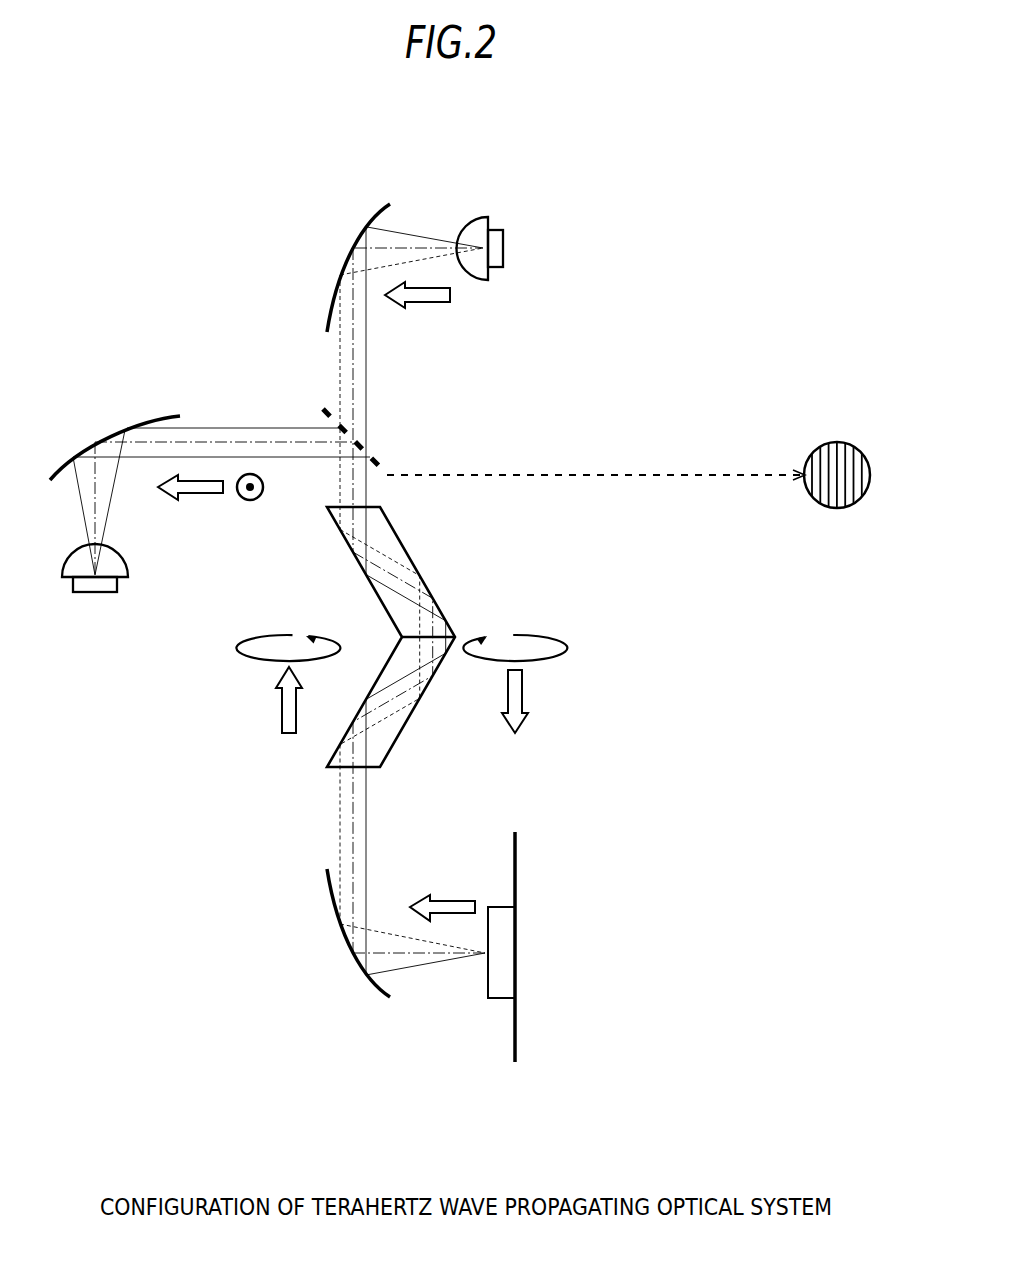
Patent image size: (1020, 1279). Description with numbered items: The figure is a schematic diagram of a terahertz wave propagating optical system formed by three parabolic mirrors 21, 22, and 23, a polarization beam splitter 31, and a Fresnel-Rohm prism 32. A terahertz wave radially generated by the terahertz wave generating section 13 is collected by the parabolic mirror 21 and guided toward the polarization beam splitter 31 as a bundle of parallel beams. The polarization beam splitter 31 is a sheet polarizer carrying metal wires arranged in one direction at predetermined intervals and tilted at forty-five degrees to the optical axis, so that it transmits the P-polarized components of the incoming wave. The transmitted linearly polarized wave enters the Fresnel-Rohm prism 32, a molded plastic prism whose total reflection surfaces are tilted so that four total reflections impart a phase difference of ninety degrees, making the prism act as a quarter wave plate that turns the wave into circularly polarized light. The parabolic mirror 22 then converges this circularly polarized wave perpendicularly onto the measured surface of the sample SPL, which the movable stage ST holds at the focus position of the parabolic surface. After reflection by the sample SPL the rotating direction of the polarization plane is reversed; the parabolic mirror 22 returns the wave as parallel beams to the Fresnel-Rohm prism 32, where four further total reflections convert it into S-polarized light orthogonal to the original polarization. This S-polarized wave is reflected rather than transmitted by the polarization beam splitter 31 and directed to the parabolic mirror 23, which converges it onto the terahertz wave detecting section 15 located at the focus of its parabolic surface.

The terahertz wave generating section 13 is at (505, 248).
The terahertz wave detecting section 15 is at (77, 592).
The parabolic mirror 21 is at (368, 218).
The parabolic mirror 22 is at (382, 1000).
The parabolic mirror 23 is at (102, 438).
The polarization beam splitter 31 is at (388, 467).
The Fresnel-Rohm prism 32 is at (402, 542).
The movable stage ST is at (518, 863).
The sample SPL is at (505, 973).